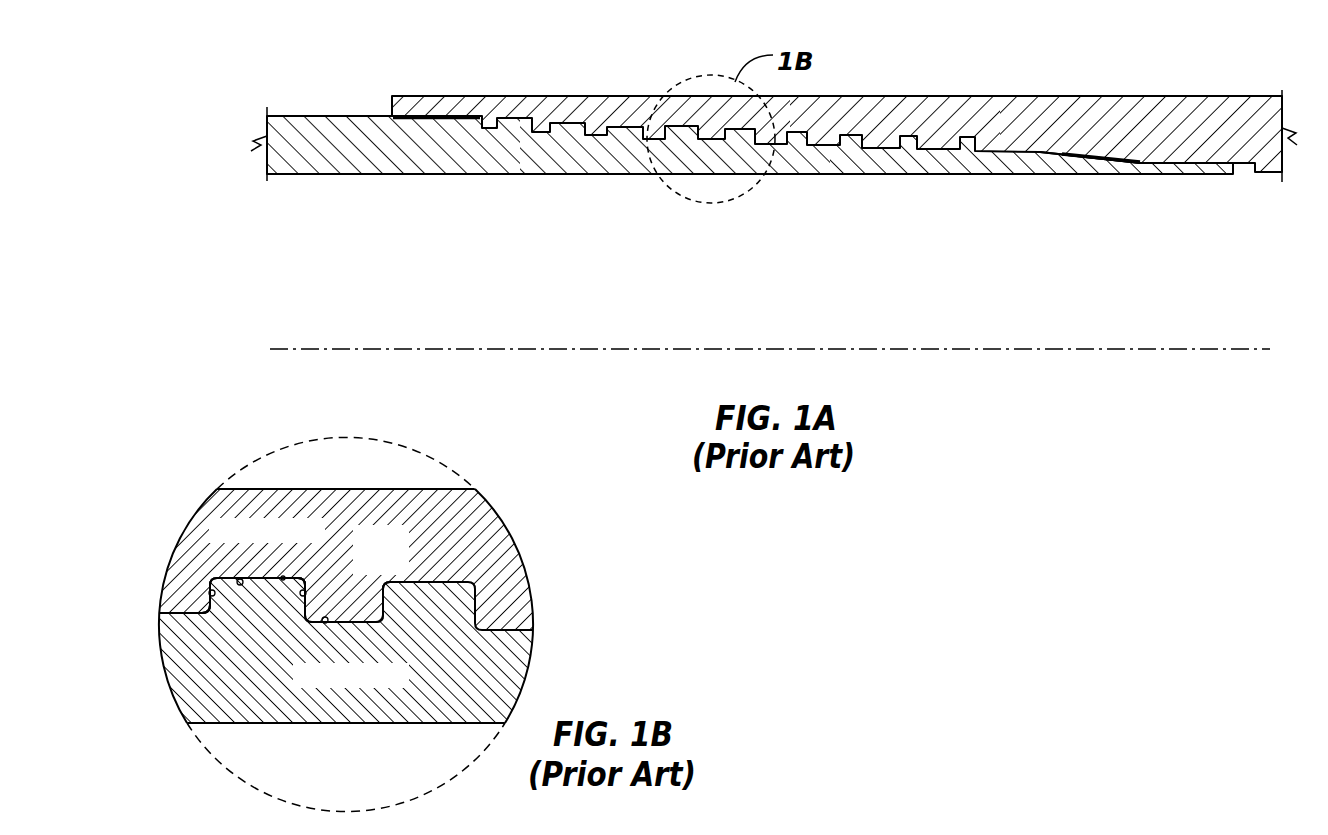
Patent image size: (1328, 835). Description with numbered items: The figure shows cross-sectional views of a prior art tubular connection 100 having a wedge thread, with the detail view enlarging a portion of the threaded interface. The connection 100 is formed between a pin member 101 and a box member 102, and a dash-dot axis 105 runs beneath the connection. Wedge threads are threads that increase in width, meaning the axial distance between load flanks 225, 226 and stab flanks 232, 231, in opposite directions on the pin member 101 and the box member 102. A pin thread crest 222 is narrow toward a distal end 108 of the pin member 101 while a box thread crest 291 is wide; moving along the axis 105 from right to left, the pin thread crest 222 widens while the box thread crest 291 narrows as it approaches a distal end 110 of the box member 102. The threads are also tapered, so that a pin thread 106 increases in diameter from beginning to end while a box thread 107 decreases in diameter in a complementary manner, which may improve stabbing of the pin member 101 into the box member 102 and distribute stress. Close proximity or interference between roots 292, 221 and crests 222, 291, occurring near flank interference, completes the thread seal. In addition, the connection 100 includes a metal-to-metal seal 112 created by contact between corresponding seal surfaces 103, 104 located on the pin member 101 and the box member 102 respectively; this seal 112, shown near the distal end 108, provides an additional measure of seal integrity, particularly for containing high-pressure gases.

In FIG. 1A, the tubular connection 100 is at (1110, 67).
In FIG. 1A, the pin member 101 is at (368, 157).
In FIG. 1B, the pin member 101 is at (246, 691).
In FIG. 1A, the box member 102 is at (1086, 141).
In FIG. 1B, the box member 102 is at (468, 536).
In FIG. 1A, the seal surface 103 is at (1140, 157).
In FIG. 1A, the seal surface 104 is at (1172, 163).
In FIG. 1A, the axis 105 is at (1110, 349).
In FIG. 1B, the pin thread 106 is at (279, 627).
In FIG. 1B, the box thread 107 is at (376, 614).
In FIG. 1A, the distal end of pin member 108 is at (1227, 177).
In FIG. 1A, the distal end of box member 110 is at (423, 93).
In FIG. 1A, the metal-to-metal seal 112 is at (1132, 128).
In FIG. 1B, the root 221 is at (241, 579).
In FIG. 1B, the pin thread crest 222 is at (283, 576).
In FIG. 1B, the load flank 225 is at (210, 592).
In FIG. 1B, the load flank 226 is at (203, 608).
In FIG. 1B, the stab flank 231 is at (306, 597).
In FIG. 1B, the stab flank 232 is at (308, 580).
In FIG. 1B, the box thread crest 291 is at (367, 623).
In FIG. 1B, the root 292 is at (326, 624).